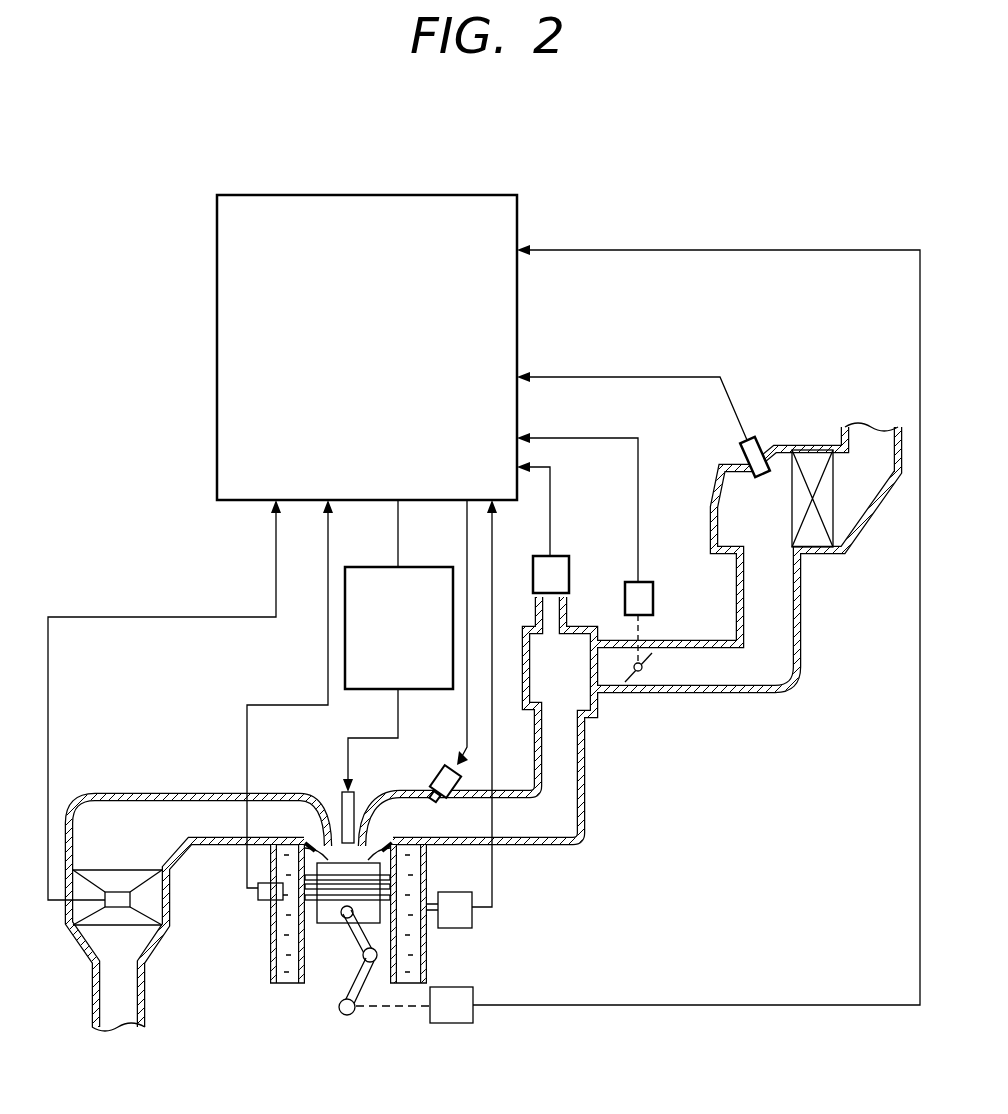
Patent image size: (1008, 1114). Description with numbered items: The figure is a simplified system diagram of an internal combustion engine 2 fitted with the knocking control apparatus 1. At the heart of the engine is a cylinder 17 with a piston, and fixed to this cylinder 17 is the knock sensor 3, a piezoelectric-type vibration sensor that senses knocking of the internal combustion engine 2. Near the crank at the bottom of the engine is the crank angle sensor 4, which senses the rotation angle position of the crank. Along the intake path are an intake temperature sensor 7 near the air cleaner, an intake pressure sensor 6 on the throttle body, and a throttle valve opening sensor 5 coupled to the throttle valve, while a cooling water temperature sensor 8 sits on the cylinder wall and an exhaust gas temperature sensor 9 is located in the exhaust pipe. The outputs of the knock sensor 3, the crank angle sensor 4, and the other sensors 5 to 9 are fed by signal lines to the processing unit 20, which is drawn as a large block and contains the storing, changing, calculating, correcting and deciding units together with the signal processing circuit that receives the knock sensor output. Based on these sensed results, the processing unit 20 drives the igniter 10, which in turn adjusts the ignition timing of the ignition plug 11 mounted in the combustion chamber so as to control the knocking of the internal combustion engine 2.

The knocking control apparatus 1 is at (567, 173).
The internal combustion engine 2 is at (449, 919).
The knock sensor 3 is at (473, 917).
The crank angle sensor 4 is at (474, 992).
The throttle valve opening sensor 5 is at (653, 595).
The intake pressure sensor 6 is at (569, 572).
The intake temperature sensor 7 is at (761, 450).
The cooling water temperature sensor 8 is at (262, 902).
The exhaust gas temperature sensor 9 is at (131, 899).
The igniter 10 is at (428, 567).
The ignition plug 11 is at (340, 795).
The cylinder 17 is at (428, 952).
The processing unit 20 is at (438, 190).